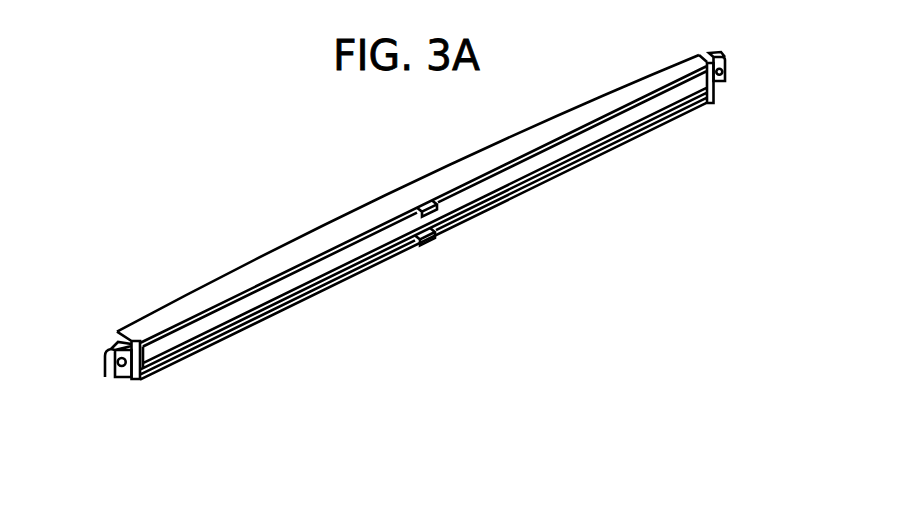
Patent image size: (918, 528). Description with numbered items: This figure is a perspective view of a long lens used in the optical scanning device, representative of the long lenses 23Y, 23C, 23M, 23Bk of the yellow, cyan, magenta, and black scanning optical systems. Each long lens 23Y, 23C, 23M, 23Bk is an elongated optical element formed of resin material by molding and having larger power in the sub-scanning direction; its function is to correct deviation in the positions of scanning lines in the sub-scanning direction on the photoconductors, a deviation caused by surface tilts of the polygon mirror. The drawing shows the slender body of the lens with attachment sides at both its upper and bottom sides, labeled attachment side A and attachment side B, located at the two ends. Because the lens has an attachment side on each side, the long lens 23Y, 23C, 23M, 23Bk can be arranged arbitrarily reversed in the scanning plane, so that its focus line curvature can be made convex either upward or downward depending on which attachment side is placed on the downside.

The long lens 23Y is at (437, 216).
The long lens 23C is at (415, 216).
The long lens 23M is at (415, 216).
The long lens 23Bk is at (527, 172).